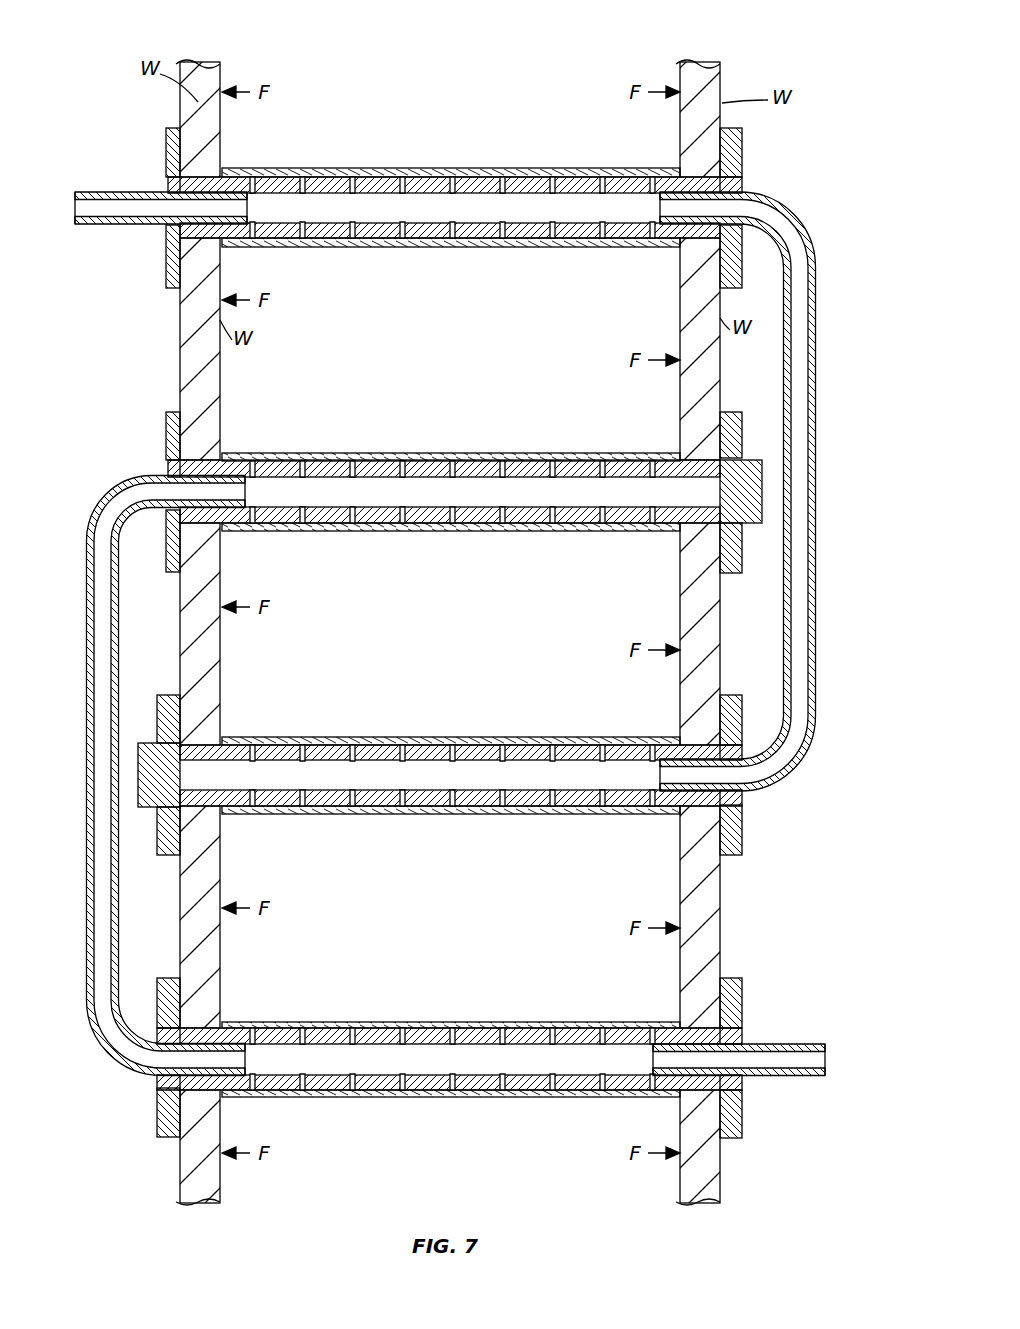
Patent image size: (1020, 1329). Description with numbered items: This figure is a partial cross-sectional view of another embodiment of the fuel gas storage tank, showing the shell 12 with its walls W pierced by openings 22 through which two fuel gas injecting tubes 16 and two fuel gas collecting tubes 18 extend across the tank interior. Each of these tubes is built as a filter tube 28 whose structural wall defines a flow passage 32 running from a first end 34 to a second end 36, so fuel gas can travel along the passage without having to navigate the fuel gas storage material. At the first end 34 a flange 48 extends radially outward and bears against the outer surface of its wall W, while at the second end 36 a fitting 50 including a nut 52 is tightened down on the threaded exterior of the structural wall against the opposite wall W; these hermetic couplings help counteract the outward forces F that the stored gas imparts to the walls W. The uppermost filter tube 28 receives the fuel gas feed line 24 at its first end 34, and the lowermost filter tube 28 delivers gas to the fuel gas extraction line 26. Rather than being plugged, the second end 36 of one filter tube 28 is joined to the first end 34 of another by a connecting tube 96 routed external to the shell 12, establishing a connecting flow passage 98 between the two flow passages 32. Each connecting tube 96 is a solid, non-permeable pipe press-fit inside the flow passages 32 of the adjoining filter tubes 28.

The shell 12 is at (720, 73).
The fuel gas injecting tube 16 is at (337, 172).
The fuel gas collecting tube 18 is at (386, 447).
The opening 22 is at (225, 184).
The fuel gas feed line 24 is at (110, 192).
The fuel gas extraction line 26 is at (808, 1042).
The filter tube 28 is at (425, 247).
The flow passage 32 is at (419, 220).
The first end 34 is at (180, 188).
The second end 36 is at (745, 189).
The flange 48 is at (166, 272).
The fitting 50 is at (748, 540).
The nut 52 is at (742, 148).
The connecting tube 96 is at (818, 340).
The connecting flow passage 98 is at (809, 467).